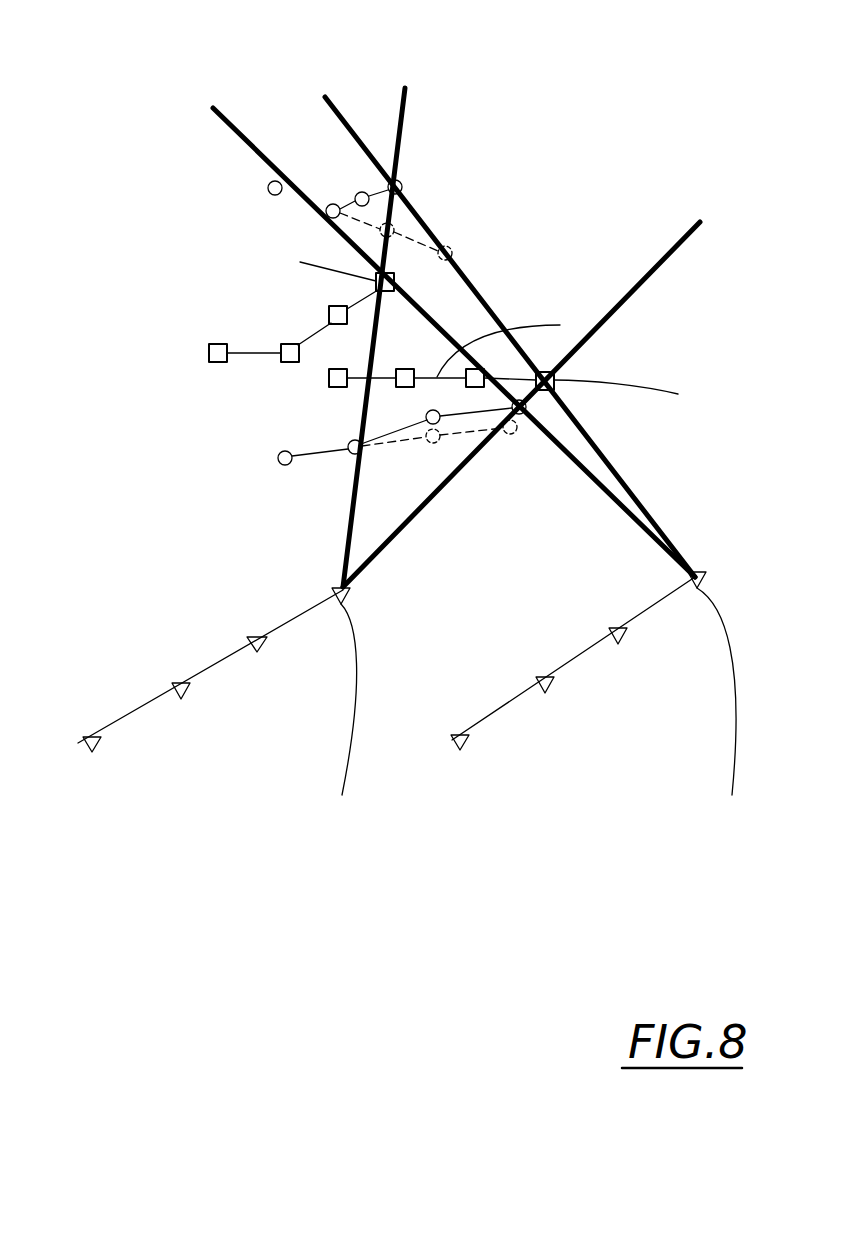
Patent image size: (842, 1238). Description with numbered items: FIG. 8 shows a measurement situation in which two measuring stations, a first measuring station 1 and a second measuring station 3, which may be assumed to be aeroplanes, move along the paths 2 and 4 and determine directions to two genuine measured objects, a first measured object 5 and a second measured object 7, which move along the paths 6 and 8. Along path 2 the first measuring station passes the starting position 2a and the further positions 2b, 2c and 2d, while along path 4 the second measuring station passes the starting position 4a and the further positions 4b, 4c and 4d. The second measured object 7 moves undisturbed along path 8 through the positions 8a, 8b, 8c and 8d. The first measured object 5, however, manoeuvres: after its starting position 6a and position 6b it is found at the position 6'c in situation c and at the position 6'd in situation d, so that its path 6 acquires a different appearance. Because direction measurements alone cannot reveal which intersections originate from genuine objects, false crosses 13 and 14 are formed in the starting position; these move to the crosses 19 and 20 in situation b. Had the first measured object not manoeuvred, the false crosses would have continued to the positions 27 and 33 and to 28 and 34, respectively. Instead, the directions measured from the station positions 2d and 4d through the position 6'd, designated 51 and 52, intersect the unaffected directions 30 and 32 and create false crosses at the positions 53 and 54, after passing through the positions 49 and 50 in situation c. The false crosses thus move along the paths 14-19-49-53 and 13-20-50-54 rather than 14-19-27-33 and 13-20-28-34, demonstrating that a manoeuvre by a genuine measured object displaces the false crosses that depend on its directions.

The first measuring station 1 is at (358, 590).
The path of the first measuring station 2 is at (142, 715).
The starting position of the first measuring station 2a is at (92, 752).
The position b of the first measuring station 2b is at (181, 699).
The position c of the first measuring station 2c is at (257, 652).
The position d of the first measuring station 2d is at (341, 721).
The second measuring station 3 is at (712, 578).
The path of the second measuring station 4 is at (510, 715).
The starting position of the second measuring station 4a is at (460, 750).
The position b of the second measuring station 4b is at (545, 693).
The position c of the second measuring station 4c is at (618, 644).
The position d of the second measuring station 4d is at (724, 713).
The first measured object 5 is at (400, 288).
The path of the first measured object 6 is at (194, 399).
The starting position of the first measured object 6a is at (209, 355).
The position b of the first measured object 6b is at (290, 344).
The manoeuvred position c of the first measured object 6'c is at (226, 317).
The manoeuvred position d of the first measured object 6'd is at (240, 269).
The second measured object 7 is at (560, 390).
The path of the second measured object 8 is at (560, 325).
The starting position of the second measured object 8a is at (329, 379).
The position b of the second measured object 8b is at (407, 369).
The position c of the second measured object 8c is at (486, 369).
The position d of the second measured object 8d is at (641, 396).
The false cross 13 is at (278, 459).
The false cross 14 is at (268, 187).
The false cross at position b 19 is at (328, 231).
The false cross at position b 20 is at (349, 453).
The false cross at position c without manoeuvre 27 is at (395, 230).
The false cross at position c without manoeuvre 28 is at (440, 438).
The unaffected direction 30 is at (677, 237).
The unaffected direction 32 is at (350, 122).
The false cross at position d without manoeuvre 33 is at (452, 252).
The false cross at position d without manoeuvre 34 is at (517, 428).
The false cross at position c after manoeuvre 49 is at (356, 199).
The false cross at position c after manoeuvre 50 is at (439, 421).
The direction from position 2d through position 6'd 51 is at (405, 117).
The direction from position 4d through position 6'd 52 is at (220, 112).
The false cross at position d after manoeuvre 53 is at (402, 185).
The false cross at position d after manoeuvre 54 is at (526, 408).